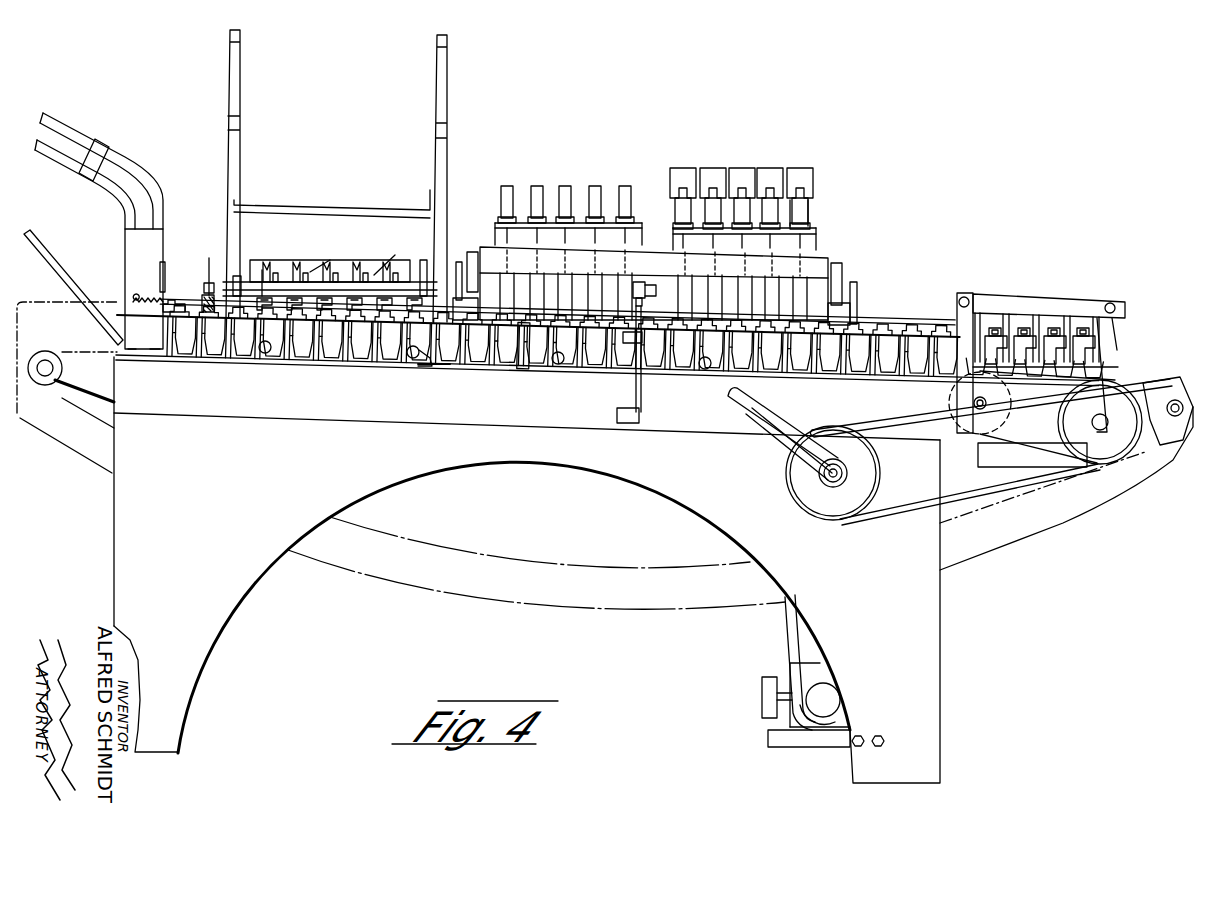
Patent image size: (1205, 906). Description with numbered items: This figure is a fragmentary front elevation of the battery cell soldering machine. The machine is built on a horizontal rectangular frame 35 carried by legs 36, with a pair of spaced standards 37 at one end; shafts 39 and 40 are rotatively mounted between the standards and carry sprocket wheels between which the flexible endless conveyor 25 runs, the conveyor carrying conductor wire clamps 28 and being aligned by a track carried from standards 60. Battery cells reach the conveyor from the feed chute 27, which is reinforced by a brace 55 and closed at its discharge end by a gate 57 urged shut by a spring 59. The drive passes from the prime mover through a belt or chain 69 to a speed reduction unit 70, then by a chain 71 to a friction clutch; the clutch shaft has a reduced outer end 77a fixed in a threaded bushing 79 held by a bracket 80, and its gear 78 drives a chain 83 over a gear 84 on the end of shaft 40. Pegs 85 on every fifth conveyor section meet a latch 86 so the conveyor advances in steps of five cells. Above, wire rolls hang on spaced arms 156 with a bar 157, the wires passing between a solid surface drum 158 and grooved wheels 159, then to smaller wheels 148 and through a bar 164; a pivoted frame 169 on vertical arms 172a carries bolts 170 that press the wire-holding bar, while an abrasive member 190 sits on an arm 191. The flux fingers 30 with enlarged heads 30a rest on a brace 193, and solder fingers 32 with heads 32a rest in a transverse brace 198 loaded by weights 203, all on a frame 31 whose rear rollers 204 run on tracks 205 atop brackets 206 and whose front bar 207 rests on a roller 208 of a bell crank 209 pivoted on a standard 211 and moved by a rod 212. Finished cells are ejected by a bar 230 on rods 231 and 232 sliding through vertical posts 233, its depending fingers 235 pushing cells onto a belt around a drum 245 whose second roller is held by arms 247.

The flexible endless conveyor 25 is at (425, 540).
The feed chute 27 is at (72, 165).
The conductor wire clamps 28 is at (1080, 312).
The flux fingers 30 is at (537, 192).
The enlarged heads 30a is at (568, 222).
The frame 31 is at (820, 262).
The solder fingers 32 is at (800, 210).
The enlarged heads 32a is at (810, 230).
The horizontal rectangular frame 35 is at (312, 415).
The legs 36 is at (200, 637).
The spaced standards 37 is at (98, 384).
The shaft 39 is at (45, 372).
The shaft 40 is at (1100, 422).
The brace 55 is at (55, 262).
The gate 57 is at (165, 285).
The spring 59 is at (144, 289).
The standards 60 is at (528, 366).
The belt or chain 69 is at (768, 715).
The speed reduction unit 70 is at (818, 672).
The chain 71 is at (786, 650).
The reduced outer end 77a is at (822, 485).
The gear 78 is at (842, 498).
The threaded bushing 79 is at (850, 473).
The bracket 80 is at (782, 430).
The chain 83 is at (985, 490).
The gear 84 is at (1110, 448).
The pegs 85 is at (265, 353).
The latch 86 is at (430, 363).
The smaller wheels 148 is at (330, 312).
The spaced arms 156 is at (233, 72).
The bar 157 is at (305, 207).
The solid surface drum 158 is at (345, 280).
The grooved wheels 159 is at (298, 258).
The bar 164 is at (400, 310).
The frame 169 is at (300, 285).
The bolts 170 is at (399, 252).
The vertical arms 172a is at (232, 298).
The abrasive member 190 is at (200, 298).
The arm 191 is at (201, 270).
The brace 193 is at (640, 225).
The transverse brace 198 is at (675, 232).
The weights 203 is at (770, 175).
The rollers 204 is at (472, 254).
The tracks 205 is at (850, 310).
The brackets 206 is at (458, 266).
The bar 207 is at (650, 284).
The roller 208 is at (658, 306).
The bell crank 209 is at (641, 392).
The standard 211 is at (626, 343).
The rod 212 is at (617, 418).
The longitudinally extending bar 230 is at (1045, 298).
The rod 231 is at (1116, 304).
The rod 232 is at (968, 298).
The vertical posts 233 is at (957, 318).
The downward depending fingers 235 is at (1100, 330).
The drum 245 is at (995, 412).
The arms 247 is at (1140, 380).